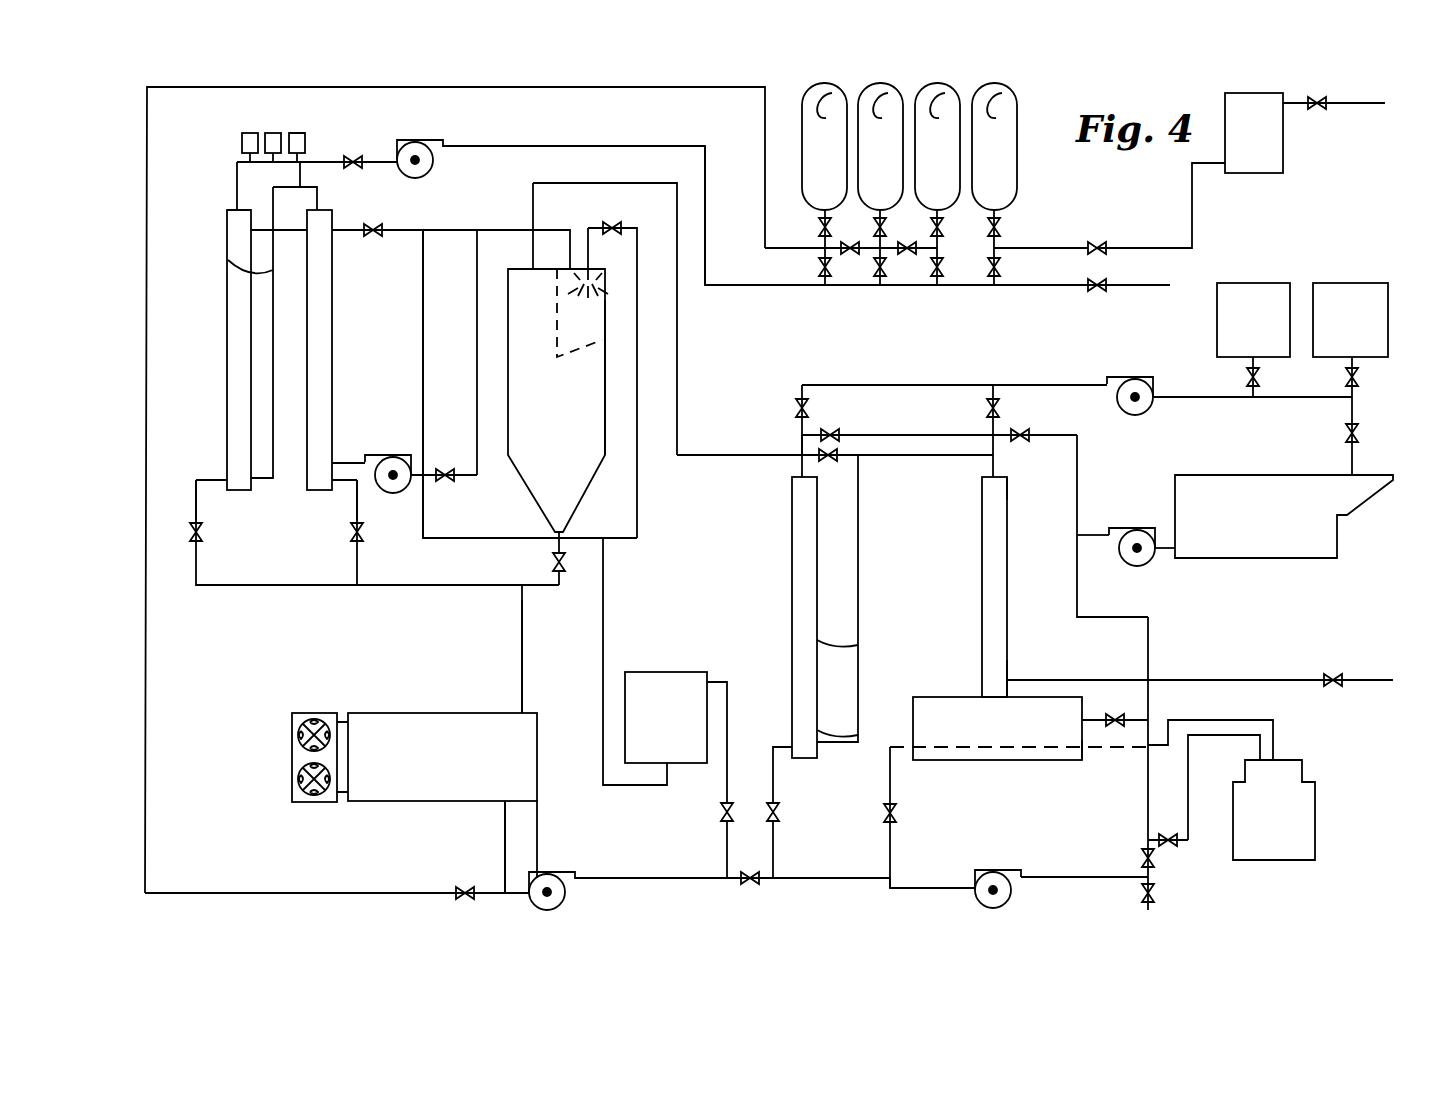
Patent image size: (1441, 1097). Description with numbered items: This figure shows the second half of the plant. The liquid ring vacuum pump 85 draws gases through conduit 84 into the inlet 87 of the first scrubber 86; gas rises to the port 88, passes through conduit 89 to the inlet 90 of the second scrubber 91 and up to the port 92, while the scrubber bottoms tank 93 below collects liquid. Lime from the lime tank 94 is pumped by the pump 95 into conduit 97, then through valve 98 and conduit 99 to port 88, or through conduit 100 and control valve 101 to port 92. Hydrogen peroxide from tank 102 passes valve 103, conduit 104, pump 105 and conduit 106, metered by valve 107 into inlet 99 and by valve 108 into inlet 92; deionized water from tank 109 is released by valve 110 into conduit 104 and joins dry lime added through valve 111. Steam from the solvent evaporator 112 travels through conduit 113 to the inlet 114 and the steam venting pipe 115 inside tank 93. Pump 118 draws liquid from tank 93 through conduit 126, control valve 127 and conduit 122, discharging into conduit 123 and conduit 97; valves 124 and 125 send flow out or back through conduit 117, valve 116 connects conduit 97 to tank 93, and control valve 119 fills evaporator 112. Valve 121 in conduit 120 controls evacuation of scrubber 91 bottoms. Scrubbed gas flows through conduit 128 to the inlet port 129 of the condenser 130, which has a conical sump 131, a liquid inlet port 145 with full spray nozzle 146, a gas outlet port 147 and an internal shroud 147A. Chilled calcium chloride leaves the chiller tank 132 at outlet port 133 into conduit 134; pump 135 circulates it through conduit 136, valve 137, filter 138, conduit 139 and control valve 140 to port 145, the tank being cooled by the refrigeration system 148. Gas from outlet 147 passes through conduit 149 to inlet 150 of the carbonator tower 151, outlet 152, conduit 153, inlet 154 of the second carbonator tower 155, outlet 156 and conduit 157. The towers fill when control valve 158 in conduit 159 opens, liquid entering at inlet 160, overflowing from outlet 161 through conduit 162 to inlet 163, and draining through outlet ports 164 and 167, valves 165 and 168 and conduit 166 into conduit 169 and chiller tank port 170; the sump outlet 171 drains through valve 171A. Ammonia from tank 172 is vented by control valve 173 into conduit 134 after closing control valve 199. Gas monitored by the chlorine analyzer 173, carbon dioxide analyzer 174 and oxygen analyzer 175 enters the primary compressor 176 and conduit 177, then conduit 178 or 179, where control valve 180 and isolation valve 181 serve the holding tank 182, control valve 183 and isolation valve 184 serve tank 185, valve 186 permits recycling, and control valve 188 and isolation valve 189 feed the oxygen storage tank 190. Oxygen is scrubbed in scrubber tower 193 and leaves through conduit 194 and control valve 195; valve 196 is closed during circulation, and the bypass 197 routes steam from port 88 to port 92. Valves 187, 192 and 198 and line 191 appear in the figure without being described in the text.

The conduit 84 is at (1370, 680).
The liquid ring vacuum pump 85 is at (440, 470).
The first scrubber 86 is at (1010, 635).
The inlet 87 is at (1010, 675).
The port 88 is at (1010, 480).
The conduit 89 is at (860, 598).
The inlet 90 is at (858, 742).
The second scrubber 91 is at (860, 650).
The port 92 is at (795, 478).
The scrubber bottoms tank 93 is at (950, 715).
The lime tank 94 is at (1210, 490).
The pump 95 is at (1155, 560).
The conduit 97 is at (1085, 500).
The valve 98 is at (1030, 430).
The conduit 99 is at (1078, 480).
The conduit 100 is at (878, 408).
The control valve 101 is at (830, 425).
The hydrogen peroxide tank 102 is at (1250, 290).
The valve 103 is at (1260, 377).
The conduit 104 is at (1300, 400).
The pump 105 is at (1140, 380).
The conduit 106 is at (1020, 385).
The valve 107 is at (986, 408).
The valve 108 is at (795, 408).
The deionized water tank 109 is at (1345, 290).
The valve 110 is at (1358, 377).
The valve 111 is at (1358, 433).
The solvent evaporator 112 is at (1300, 775).
The conduit 113 is at (1273, 740).
The inlet 114 is at (1082, 752).
The steam venting pipe 115 is at (990, 752).
The valve 116 is at (1145, 718).
The conduit 117 is at (1230, 765).
The bottoms tank pump 118 is at (975, 880).
The control valve 119 is at (1178, 850).
The conduit 120 is at (795, 752).
The valve 121 is at (780, 815).
The conduit 122 is at (830, 882).
The conduit 123 is at (1045, 877).
The valve 124 is at (1140, 893).
The valve 125 is at (1140, 858).
The conduit 126 is at (870, 875).
The control valve 127 is at (898, 812).
The conduit 128 is at (677, 458).
The inlet port 129 is at (520, 268).
The condenser 130 is at (610, 408).
The conical sump 131 is at (605, 498).
The chiller tank 132 is at (370, 718).
The chiller tank outlet port 133 is at (505, 805).
The conduit 134 is at (608, 90).
The pump 135 is at (575, 875).
The conduit 136 is at (725, 850).
The valve 137 is at (722, 812).
The filter 138 is at (670, 680).
The conduit 139 is at (605, 600).
The control valve 140 is at (612, 222).
The liquid inlet port 145 is at (570, 200).
The full spray nozzle 146 is at (705, 290).
The gas outlet port 147 is at (533, 222).
The internal shroud 147A is at (600, 385).
The refrigeration system 148 is at (300, 757).
The conduit 149 is at (477, 388).
The inlet 150 is at (375, 462).
The carbonator tower 151 is at (368, 340).
The outlet 152 is at (318, 207).
The conduit 153 is at (320, 162).
The inlet 154 is at (300, 492).
The second carbonator tower 155 is at (235, 343).
The outlet 156 is at (235, 205).
The conduit 157 is at (237, 175).
The control valve 158 is at (380, 235).
The conduit 159 is at (440, 170).
The inlet 160 is at (337, 228).
The outlet 161 is at (290, 200).
The conduit 162 is at (273, 280).
The inlet 163 is at (240, 250).
The liquid outlet port 164 is at (215, 478).
The control valve 165 is at (205, 535).
The conduit 166 is at (200, 492).
The liquid outlet port 167 is at (356, 492).
The valve 168 is at (360, 540).
The conduit 169 is at (522, 620).
The chiller tank port 170 is at (522, 690).
The sump outlet 171 is at (553, 530).
The valve 171A is at (553, 562).
The ammonia tank 172 is at (825, 90).
The control valve 173 is at (243, 140).
The carbon dioxide gas analyzer 174 is at (465, 895).
The oxygen gas analyzer 175 is at (296, 130).
The primary compressor 176 is at (445, 160).
The conduit 177 is at (742, 284).
The conduit 178 is at (825, 230).
The conduit 179 is at (925, 300).
The control valve 180 is at (880, 270).
The isolation valve 181 is at (1000, 200).
The holding tank 182 is at (880, 90).
The control valve 183 is at (935, 288).
The isolation valve 184 is at (948, 288).
The tank 185 is at (938, 90).
The valve 186 is at (880, 230).
The valve 187 is at (915, 285).
The control valve 188 is at (1015, 288).
The isolation valve 189 is at (1000, 250).
The oxygen storage tank 190 is at (995, 122).
The conduit 191 is at (1175, 248).
The valve 192 is at (1100, 246).
The scrubber tower 193 is at (1250, 100).
The conduit 194 is at (1285, 103).
The control valve 195 is at (1325, 110).
The valve 196 is at (750, 885).
The bypass 197 is at (925, 458).
The valve 198 is at (858, 480).
The control valve 199 is at (405, 145).